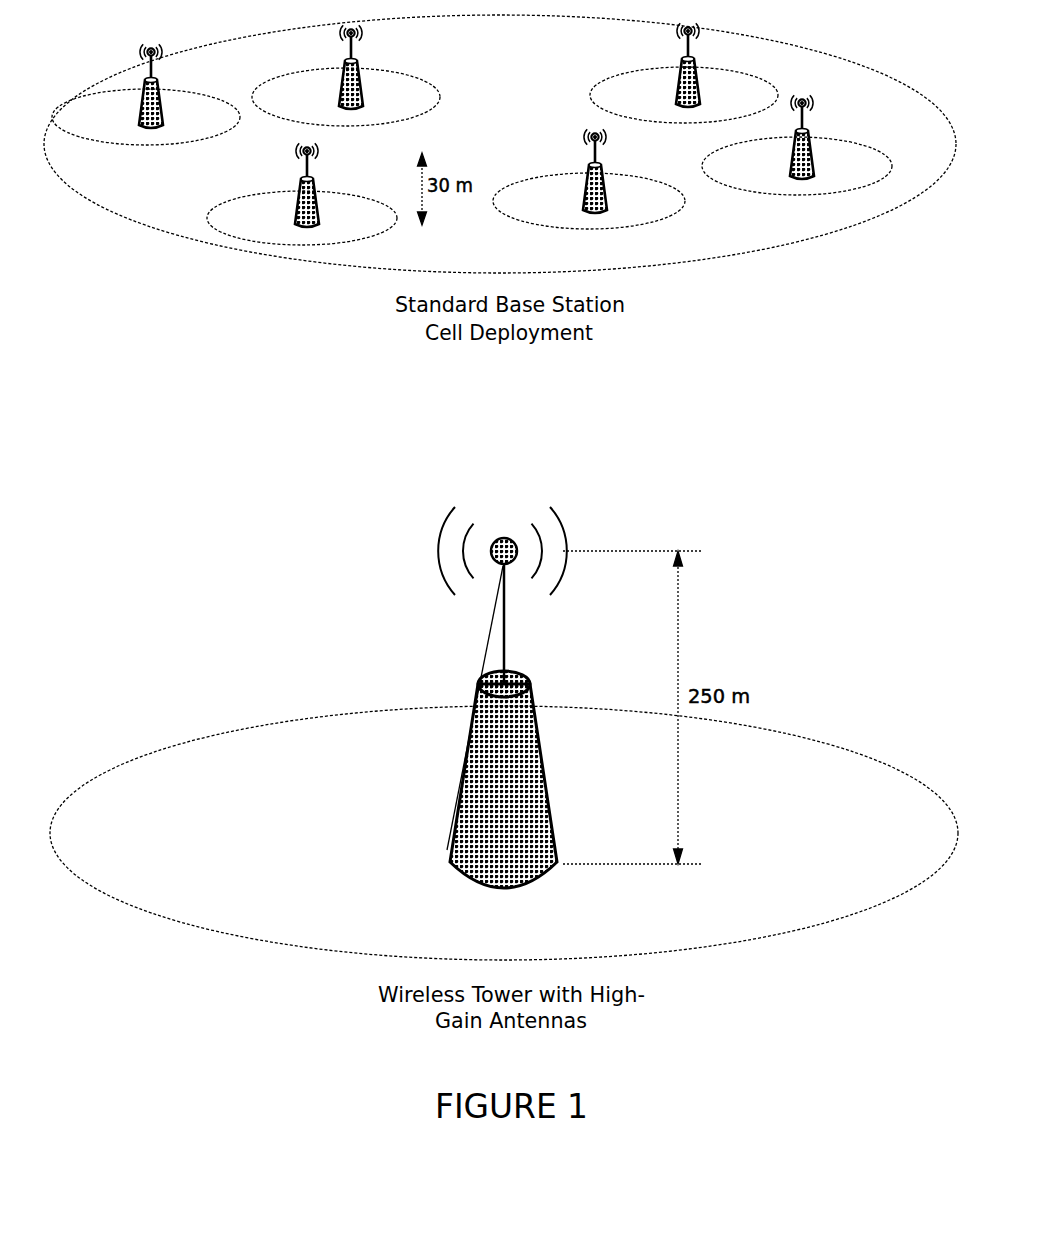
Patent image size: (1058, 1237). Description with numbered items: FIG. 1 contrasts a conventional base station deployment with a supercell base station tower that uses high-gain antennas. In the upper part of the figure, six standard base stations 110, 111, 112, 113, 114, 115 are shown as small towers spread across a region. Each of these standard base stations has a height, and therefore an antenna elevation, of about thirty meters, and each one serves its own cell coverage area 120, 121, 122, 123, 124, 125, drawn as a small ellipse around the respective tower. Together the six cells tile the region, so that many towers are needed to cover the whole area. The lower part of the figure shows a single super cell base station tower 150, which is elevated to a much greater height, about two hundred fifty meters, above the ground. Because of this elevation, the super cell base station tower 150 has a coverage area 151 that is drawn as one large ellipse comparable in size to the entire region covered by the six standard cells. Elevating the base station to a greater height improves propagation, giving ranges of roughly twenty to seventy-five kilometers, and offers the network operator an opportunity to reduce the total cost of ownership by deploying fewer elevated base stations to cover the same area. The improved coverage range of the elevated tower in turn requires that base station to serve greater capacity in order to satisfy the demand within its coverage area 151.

The standard base station 110 is at (167, 75).
The standard base station 111 is at (365, 58).
The standard base station 112 is at (296, 171).
The standard base station 113 is at (581, 158).
The standard base station 114 is at (671, 57).
The standard base station 115 is at (817, 126).
The cell coverage area 120 is at (181, 137).
The cell coverage area 121 is at (424, 95).
The cell coverage area 122 is at (223, 212).
The cell coverage area 123 is at (527, 227).
The cell coverage area 124 is at (612, 91).
The cell coverage area 125 is at (775, 190).
The super cell base station tower 150 is at (491, 691).
The coverage area 151 is at (250, 884).